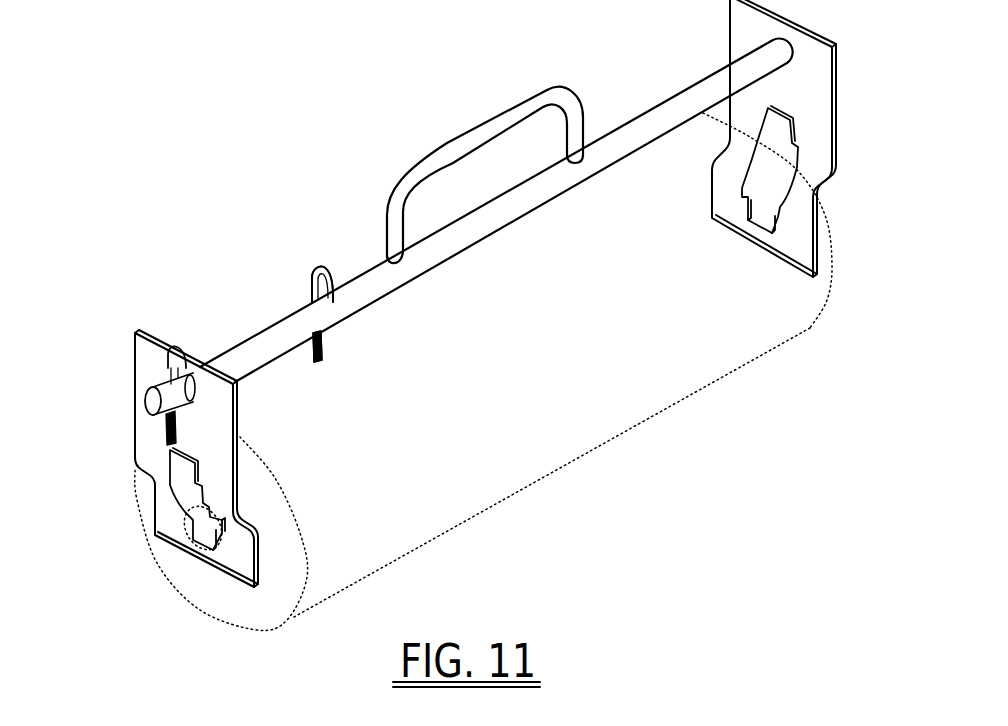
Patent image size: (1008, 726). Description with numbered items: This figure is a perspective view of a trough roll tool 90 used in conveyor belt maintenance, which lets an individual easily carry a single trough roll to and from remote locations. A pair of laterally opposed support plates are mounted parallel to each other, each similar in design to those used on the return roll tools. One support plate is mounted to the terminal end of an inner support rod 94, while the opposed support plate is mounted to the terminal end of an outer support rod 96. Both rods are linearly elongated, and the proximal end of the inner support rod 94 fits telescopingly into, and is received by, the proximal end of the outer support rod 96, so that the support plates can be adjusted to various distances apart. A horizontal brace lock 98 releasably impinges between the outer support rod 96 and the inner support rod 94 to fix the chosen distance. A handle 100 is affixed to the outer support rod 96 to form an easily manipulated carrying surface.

The trough roll tool 90 is at (220, 123).
The inner support rod 94 is at (265, 347).
The outer support rod 96 is at (357, 290).
The horizontal brace lock 98 is at (323, 333).
The handle 100 is at (477, 141).